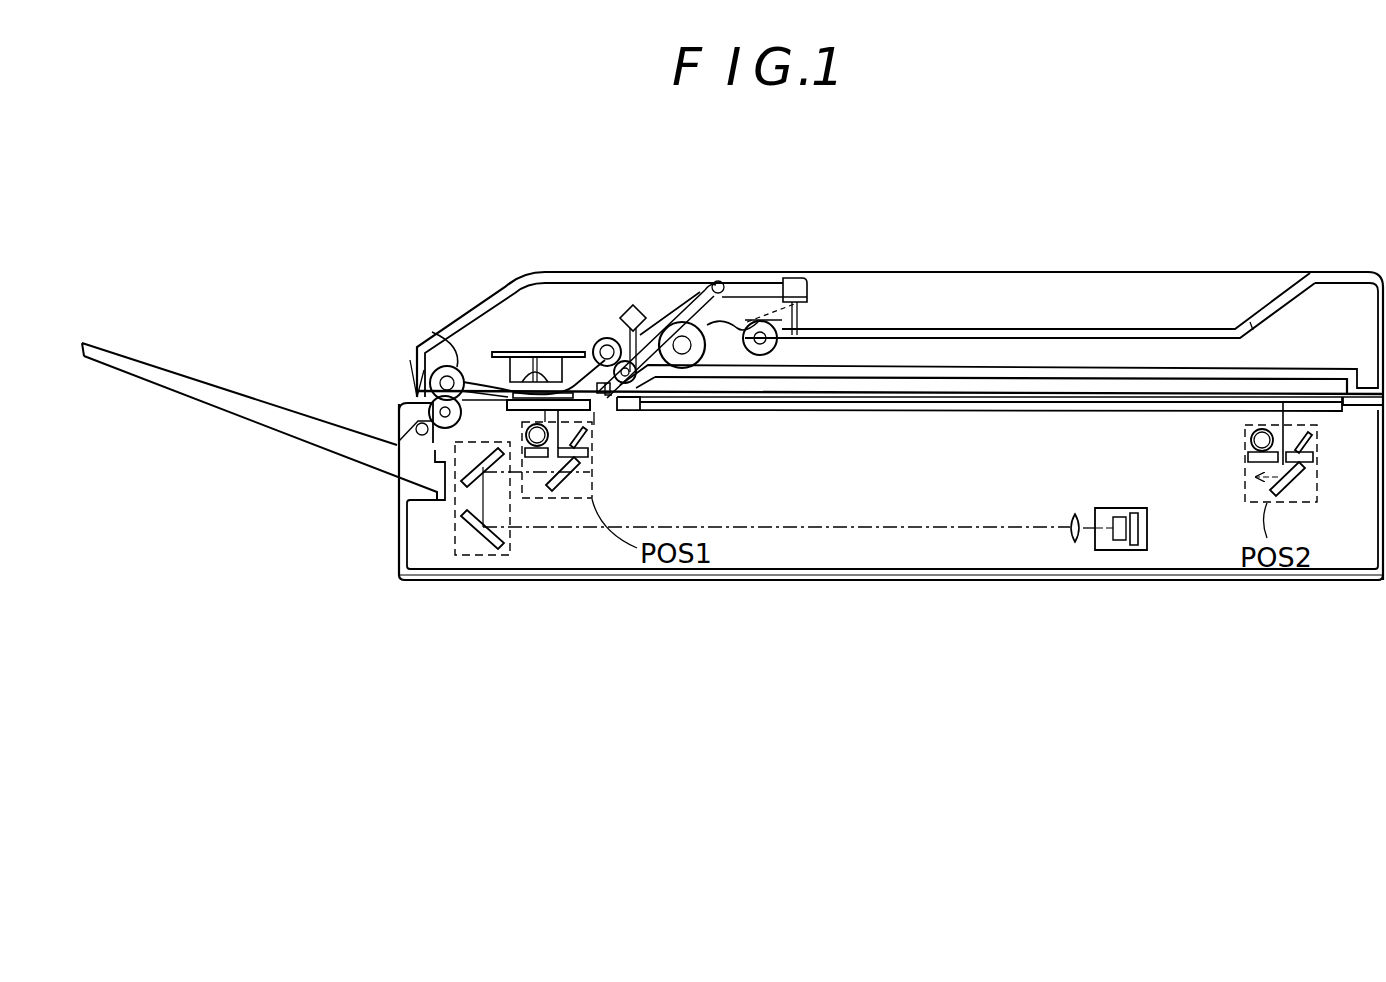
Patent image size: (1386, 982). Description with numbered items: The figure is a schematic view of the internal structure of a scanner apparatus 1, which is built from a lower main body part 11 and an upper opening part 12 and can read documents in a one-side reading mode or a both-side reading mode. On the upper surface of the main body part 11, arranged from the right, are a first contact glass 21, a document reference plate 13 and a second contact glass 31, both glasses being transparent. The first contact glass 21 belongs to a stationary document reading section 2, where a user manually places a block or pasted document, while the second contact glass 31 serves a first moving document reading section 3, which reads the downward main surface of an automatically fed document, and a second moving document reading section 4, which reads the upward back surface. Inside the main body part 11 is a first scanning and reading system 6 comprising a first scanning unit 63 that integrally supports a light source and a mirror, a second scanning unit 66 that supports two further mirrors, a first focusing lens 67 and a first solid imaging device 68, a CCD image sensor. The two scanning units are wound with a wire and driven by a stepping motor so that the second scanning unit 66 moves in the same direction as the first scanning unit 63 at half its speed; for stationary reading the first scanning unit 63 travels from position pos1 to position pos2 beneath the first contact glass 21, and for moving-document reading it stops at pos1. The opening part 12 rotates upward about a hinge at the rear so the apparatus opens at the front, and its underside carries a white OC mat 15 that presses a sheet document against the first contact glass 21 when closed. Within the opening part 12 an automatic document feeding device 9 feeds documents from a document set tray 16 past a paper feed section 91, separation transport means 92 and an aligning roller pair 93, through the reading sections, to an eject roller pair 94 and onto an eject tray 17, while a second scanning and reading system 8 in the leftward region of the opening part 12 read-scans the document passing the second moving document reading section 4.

The scanner apparatus 1 is at (298, 139).
The stationary document reading section 2 is at (1190, 497).
The first moving document reading section 3 is at (581, 517).
The second moving document reading section 4 is at (546, 331).
The first scanning and reading system 6 is at (758, 542).
The second scanning and reading system 8 is at (514, 334).
The automatic document feeding device 9 is at (650, 296).
The main body part 11 is at (936, 582).
The opening part 12 is at (1370, 271).
The document reference plate 13 is at (603, 414).
The OC mat 15 is at (1042, 386).
The document set tray 16 is at (980, 328).
The eject tray 17 is at (205, 387).
The first contact glass 21 is at (932, 411).
The second contact glass 31 is at (584, 378).
The first scanning unit 63 is at (558, 499).
The second scanning unit 66 is at (482, 556).
The first focusing lens 67 is at (1068, 518).
The first solid imaging device 68 is at (1133, 507).
The paper feed section 91 is at (753, 317).
The separation transport means 92 is at (668, 297).
The aligning roller pair 93 is at (609, 340).
The eject roller pair 94 is at (452, 365).